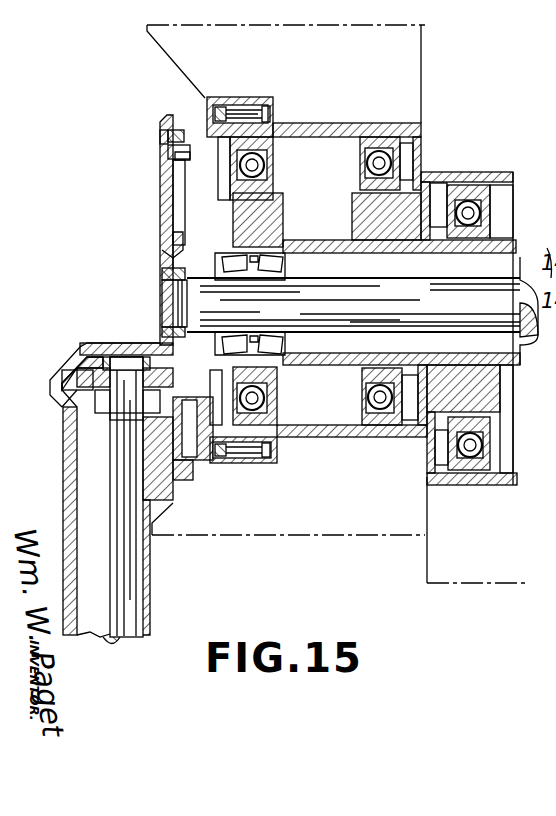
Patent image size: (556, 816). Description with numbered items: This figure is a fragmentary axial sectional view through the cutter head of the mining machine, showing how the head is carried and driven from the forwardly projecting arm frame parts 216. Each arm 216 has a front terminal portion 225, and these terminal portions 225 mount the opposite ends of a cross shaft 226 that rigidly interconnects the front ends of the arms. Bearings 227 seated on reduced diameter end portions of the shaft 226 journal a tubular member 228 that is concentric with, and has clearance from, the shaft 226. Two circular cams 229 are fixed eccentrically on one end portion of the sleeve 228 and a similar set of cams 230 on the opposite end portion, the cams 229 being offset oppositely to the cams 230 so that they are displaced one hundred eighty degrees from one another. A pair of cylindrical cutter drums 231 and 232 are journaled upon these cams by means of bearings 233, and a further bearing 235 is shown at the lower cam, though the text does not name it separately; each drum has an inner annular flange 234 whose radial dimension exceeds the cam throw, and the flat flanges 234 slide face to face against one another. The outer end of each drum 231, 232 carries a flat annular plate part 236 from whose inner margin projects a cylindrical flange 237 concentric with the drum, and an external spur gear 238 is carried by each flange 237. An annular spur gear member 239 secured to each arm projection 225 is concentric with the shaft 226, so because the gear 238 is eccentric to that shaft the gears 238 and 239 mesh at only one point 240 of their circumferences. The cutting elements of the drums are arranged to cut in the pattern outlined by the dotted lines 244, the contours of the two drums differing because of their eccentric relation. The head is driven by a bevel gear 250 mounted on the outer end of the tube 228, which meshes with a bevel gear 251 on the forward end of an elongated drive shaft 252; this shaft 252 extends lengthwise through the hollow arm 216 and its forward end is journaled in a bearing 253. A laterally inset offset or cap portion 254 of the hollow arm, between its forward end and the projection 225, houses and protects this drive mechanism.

The dotted lines 244 is at (322, 25).
The flat annular plate part 236 is at (207, 133).
The cylindrical cutter drum 231 is at (327, 128).
The bearings 233 is at (362, 162).
The cylindrical flange 237 is at (200, 168).
The cams 229 is at (355, 213).
The inner annular flange 234 is at (425, 210).
The tubular member 228 is at (518, 243).
The front terminal portions 225 is at (163, 227).
The annular spur gear member 239 is at (167, 145).
The meshing point 240 is at (175, 155).
The bevel gear 250 is at (180, 243).
The cross shaft 226 is at (193, 292).
The bearings 227 is at (286, 348).
The external spur gear 238 is at (187, 467).
The cams 230 is at (483, 388).
The ball bearing 235 is at (477, 445).
The cylindrical cutter drum 232 is at (512, 485).
The offset or cap portion 254 is at (132, 343).
The bevel gear 251 is at (80, 377).
The bearing 253 is at (95, 402).
The drive shaft 252 is at (120, 408).
The arm frame parts 216 is at (145, 586).